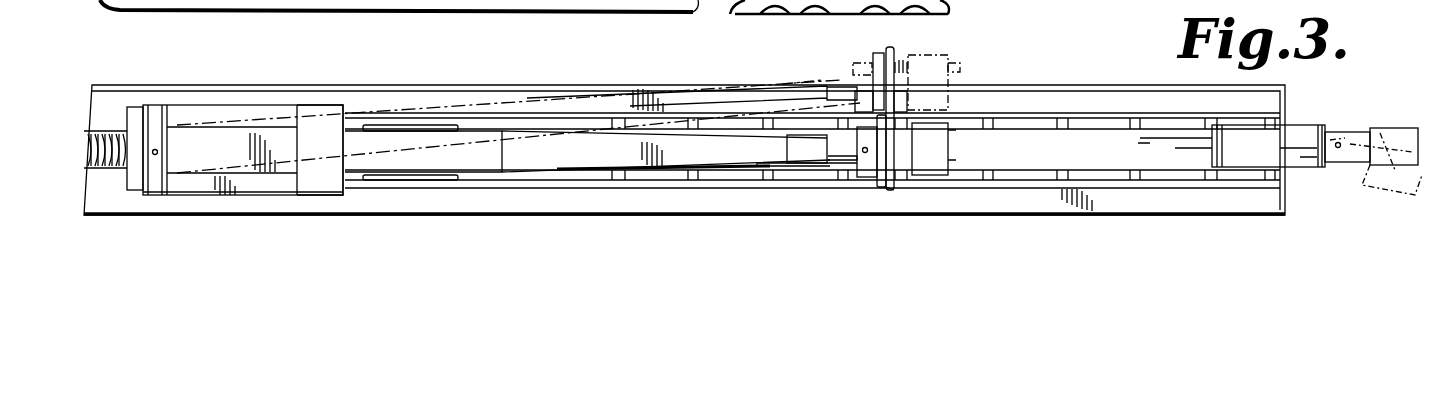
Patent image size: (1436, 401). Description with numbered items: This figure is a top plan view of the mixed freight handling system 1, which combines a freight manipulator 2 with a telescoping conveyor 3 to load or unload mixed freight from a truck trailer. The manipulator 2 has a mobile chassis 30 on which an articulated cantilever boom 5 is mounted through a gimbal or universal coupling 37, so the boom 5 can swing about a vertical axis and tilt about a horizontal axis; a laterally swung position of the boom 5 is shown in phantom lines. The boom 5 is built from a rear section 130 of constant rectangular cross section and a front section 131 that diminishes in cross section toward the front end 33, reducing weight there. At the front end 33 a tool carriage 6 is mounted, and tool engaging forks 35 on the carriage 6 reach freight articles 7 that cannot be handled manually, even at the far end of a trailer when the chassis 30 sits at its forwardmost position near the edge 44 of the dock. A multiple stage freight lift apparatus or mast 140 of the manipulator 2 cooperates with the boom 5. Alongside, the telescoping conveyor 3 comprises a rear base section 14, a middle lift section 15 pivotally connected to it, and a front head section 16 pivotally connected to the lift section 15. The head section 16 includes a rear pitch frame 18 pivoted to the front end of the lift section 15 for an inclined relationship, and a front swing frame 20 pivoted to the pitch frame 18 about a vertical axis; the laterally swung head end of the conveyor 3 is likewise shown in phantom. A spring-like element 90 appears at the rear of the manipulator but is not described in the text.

The mixed freight handling system 1 is at (1116, 72).
The freight manipulator 2 is at (332, 105).
The telescoping conveyor 3 is at (1170, 126).
The boom 5 is at (522, 98).
The tool carriage 6 is at (895, 190).
The freight articles 7 is at (940, 133).
The rear base section 14 is at (763, 166).
The middle lift section 15 is at (1075, 160).
The front head section 16 is at (1256, 158).
The rear pitch frame 18 is at (1301, 130).
The front swing frame 20 is at (1406, 112).
The mobile chassis 30 is at (248, 196).
The front end 33 is at (845, 154).
The forks 35 is at (955, 160).
The universal coupling 37 is at (157, 151).
The edge 44 is at (524, 22).
The spring 90 is at (136, 170).
The rear section 130 is at (470, 162).
The front section 131 is at (545, 163).
The mast 140 is at (880, 192).